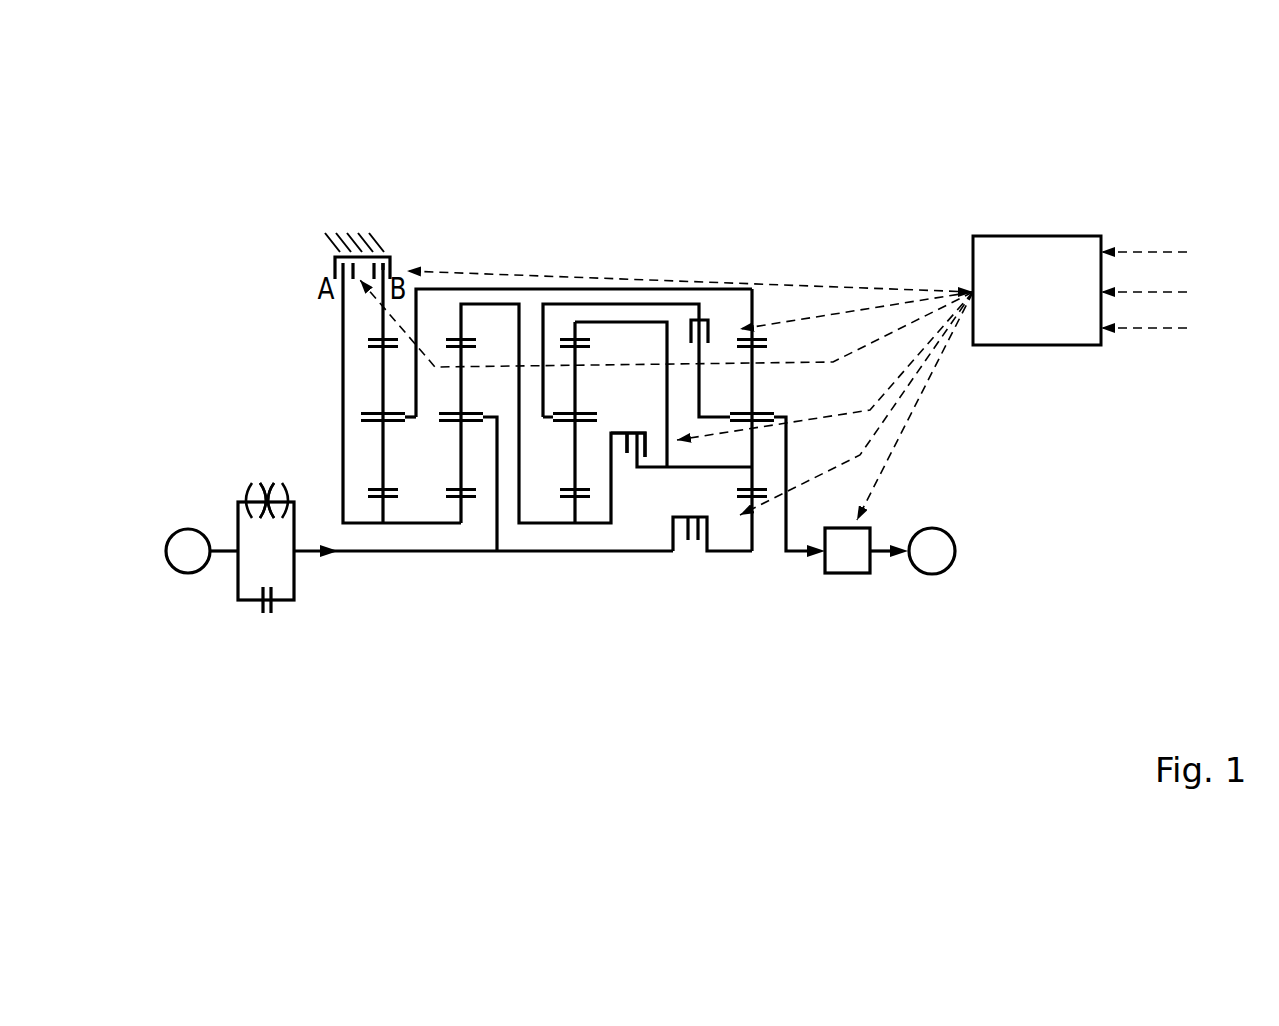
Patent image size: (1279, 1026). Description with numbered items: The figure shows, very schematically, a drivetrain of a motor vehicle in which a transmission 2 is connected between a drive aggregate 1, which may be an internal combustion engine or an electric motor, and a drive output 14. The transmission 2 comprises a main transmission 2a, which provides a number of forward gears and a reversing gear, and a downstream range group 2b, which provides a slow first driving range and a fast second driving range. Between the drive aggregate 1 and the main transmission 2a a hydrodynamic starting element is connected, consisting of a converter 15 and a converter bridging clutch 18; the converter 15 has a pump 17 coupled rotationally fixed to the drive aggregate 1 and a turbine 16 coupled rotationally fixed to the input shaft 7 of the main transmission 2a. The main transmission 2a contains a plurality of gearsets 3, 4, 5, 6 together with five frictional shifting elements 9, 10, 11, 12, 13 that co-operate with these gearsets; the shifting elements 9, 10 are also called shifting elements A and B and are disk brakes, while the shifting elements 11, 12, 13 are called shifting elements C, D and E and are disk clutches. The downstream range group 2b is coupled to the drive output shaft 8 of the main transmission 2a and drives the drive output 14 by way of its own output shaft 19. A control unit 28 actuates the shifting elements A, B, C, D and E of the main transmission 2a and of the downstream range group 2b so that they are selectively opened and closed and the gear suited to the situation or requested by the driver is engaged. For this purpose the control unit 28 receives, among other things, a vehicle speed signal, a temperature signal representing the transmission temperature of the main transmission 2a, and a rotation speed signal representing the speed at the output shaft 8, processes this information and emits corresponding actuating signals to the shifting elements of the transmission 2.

The drive aggregate 1 is at (172, 536).
The transmission 2 is at (527, 255).
The main transmission 2a is at (583, 268).
The downstream range group 2b is at (847, 575).
The gearset 3 is at (382, 567).
The gearset 4 is at (461, 567).
The gearset 5 is at (575, 567).
The gearset 6 is at (752, 567).
The input shaft 7 is at (309, 555).
The drive output shaft 8 is at (773, 417).
The shifting element A 9 is at (335, 260).
The shifting element B 10 is at (395, 262).
The shifting element C 11 is at (690, 547).
The shifting element D 12 is at (706, 313).
The shifting element E 13 is at (637, 425).
The drive output 14 is at (948, 575).
The converter 15 is at (262, 482).
The turbine 16 is at (287, 487).
The pump 17 is at (245, 500).
The converter bridging clutch 18 is at (268, 620).
The output shaft 19 is at (878, 556).
The control unit 28 is at (1026, 303).